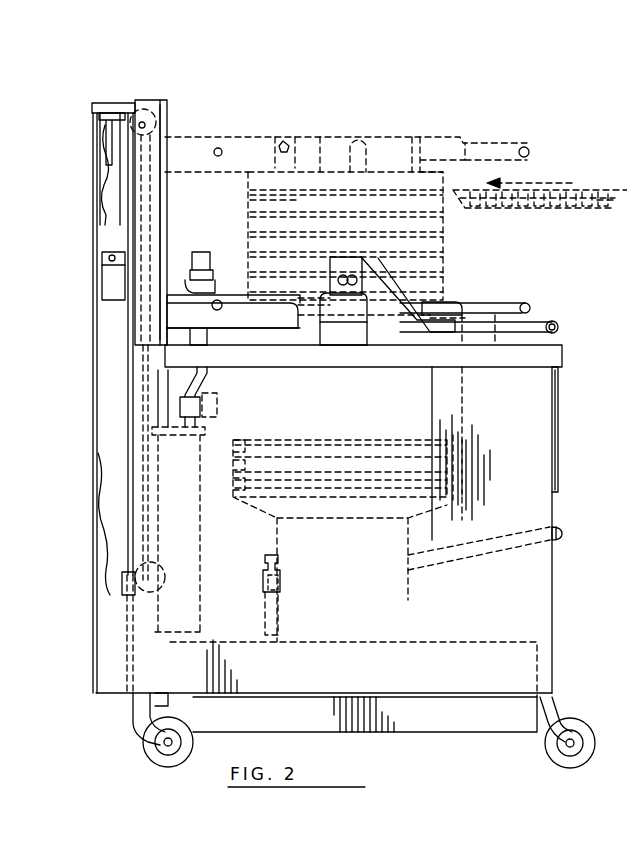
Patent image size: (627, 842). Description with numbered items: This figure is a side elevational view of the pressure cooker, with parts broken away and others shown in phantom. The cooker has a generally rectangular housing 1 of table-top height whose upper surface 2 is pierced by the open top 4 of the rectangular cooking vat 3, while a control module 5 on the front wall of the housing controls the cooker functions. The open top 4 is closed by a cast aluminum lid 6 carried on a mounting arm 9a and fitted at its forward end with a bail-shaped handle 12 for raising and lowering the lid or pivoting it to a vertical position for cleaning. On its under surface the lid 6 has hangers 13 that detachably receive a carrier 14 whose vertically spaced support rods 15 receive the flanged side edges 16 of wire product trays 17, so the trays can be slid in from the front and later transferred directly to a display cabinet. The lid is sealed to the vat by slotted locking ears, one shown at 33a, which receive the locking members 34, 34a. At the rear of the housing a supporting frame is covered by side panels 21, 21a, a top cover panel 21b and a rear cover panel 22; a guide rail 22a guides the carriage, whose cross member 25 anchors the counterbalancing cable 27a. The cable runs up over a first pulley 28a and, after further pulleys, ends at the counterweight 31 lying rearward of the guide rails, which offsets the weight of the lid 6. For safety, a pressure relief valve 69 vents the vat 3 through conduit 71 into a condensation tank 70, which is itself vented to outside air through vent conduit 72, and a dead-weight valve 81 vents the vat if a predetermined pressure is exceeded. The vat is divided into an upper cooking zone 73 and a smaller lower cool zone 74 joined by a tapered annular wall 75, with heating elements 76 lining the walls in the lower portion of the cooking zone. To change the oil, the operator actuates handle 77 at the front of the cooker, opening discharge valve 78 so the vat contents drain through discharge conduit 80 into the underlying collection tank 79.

The housing 1 is at (552, 585).
The upper surface 2 is at (398, 340).
The cooking vat 3 is at (462, 418).
The open top 4 is at (295, 335).
The control module 5 is at (557, 393).
The lid 6 is at (462, 302).
The mounting arm 9a is at (233, 300).
The bail-shaped handle 12 is at (530, 300).
The hangers 13 is at (266, 168).
The carrier 14 is at (445, 228).
The support rods 15 is at (280, 240).
The flanged side edges 16 is at (600, 188).
The wire product trays 17 is at (572, 210).
The side panel 21 is at (97, 452).
The side panel 21a is at (95, 622).
The top cover panel 21b is at (115, 103).
The rear cover panel 22 is at (93, 345).
The guide rail 22a is at (160, 115).
The cross member 25 is at (152, 584).
The counterbalancing cable 27a is at (192, 529).
The first pulley 28a is at (145, 108).
The counterweight 31 is at (102, 278).
The slotted locking ear 33a is at (345, 305).
The locking member 34 is at (607, 241).
The locking member 34a is at (347, 258).
The pressure relief valve 69 is at (218, 412).
The condensation tank 70 is at (205, 513).
The conduit 71 is at (198, 392).
The vent conduit 72 is at (150, 390).
The upper cooking zone 73 is at (428, 400).
The lower cool zone 74 is at (392, 590).
The tapered annular wall 75 is at (262, 512).
The heating elements 76 is at (318, 482).
The handle 77 is at (562, 533).
The discharge valve 78 is at (262, 578).
The collection tank 79 is at (458, 714).
The discharge conduit 80 is at (265, 610).
The dead-weight valve 81 is at (180, 290).